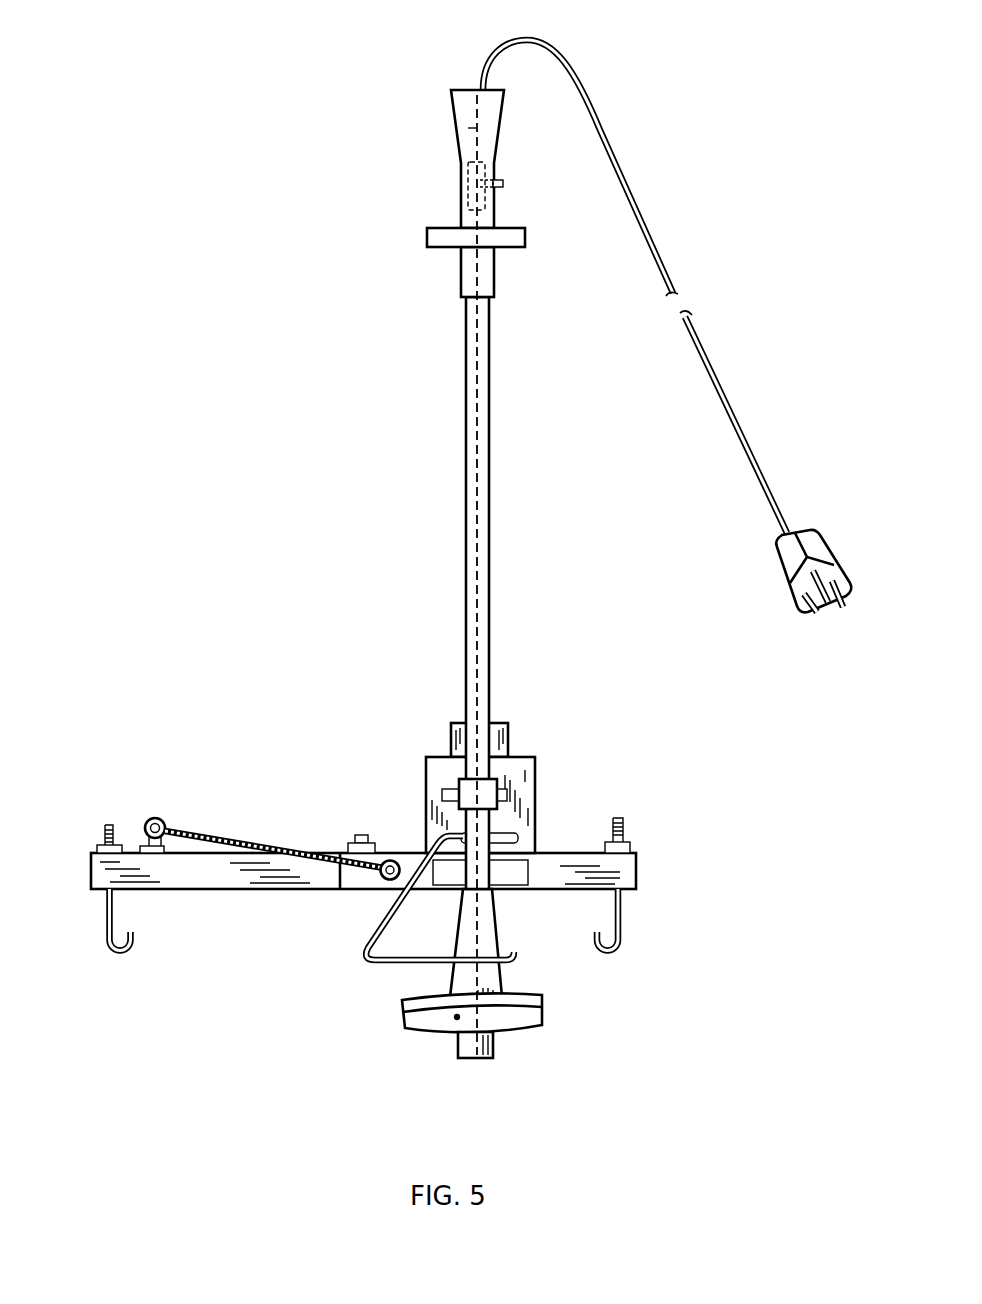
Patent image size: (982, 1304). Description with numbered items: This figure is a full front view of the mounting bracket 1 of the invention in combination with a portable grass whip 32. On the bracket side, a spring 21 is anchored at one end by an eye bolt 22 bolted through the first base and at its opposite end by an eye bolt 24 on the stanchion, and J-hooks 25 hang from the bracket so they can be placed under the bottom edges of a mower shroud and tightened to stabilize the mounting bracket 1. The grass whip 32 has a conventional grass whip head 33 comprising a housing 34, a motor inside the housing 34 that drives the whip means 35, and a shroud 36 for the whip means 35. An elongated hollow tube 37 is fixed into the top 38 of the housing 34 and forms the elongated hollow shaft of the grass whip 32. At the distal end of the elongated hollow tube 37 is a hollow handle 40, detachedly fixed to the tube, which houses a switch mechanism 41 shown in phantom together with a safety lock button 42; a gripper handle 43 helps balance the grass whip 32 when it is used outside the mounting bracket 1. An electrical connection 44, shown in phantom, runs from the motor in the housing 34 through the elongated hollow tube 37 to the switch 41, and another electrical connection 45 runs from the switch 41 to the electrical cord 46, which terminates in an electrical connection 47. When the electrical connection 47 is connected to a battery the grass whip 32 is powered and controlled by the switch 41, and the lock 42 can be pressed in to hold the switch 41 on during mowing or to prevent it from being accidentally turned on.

The mounting bracket 1 is at (650, 857).
The spring 21 is at (243, 843).
The eye bolt 22 is at (154, 818).
The eye bolt 24 is at (380, 888).
The J-hooks 25 is at (105, 924).
The grass whip 32 is at (390, 472).
The grass whip head 33 is at (550, 1043).
The housing 34 is at (503, 982).
The whip means 35 is at (455, 1018).
The shroud 36 is at (410, 1012).
The elongated hollow tube 37 is at (492, 628).
The top of the housing 38 is at (492, 826).
The hollow handle 40 is at (458, 145).
The switch mechanism 41 is at (467, 177).
The safety lock button 42 is at (503, 184).
The gripper handle 43 is at (505, 249).
The electrical connection 44 is at (490, 508).
The electrical connection 45 is at (468, 129).
The electrical cord 46 is at (677, 273).
The electrical connection 47 is at (818, 546).